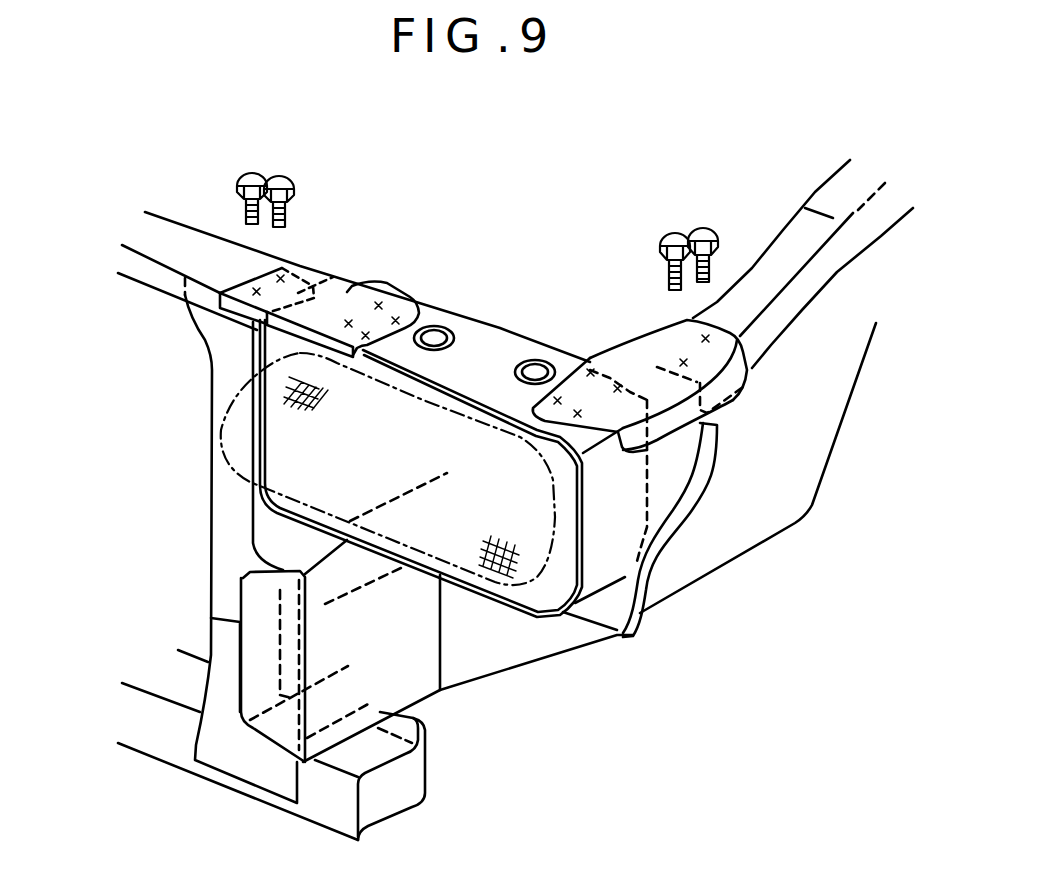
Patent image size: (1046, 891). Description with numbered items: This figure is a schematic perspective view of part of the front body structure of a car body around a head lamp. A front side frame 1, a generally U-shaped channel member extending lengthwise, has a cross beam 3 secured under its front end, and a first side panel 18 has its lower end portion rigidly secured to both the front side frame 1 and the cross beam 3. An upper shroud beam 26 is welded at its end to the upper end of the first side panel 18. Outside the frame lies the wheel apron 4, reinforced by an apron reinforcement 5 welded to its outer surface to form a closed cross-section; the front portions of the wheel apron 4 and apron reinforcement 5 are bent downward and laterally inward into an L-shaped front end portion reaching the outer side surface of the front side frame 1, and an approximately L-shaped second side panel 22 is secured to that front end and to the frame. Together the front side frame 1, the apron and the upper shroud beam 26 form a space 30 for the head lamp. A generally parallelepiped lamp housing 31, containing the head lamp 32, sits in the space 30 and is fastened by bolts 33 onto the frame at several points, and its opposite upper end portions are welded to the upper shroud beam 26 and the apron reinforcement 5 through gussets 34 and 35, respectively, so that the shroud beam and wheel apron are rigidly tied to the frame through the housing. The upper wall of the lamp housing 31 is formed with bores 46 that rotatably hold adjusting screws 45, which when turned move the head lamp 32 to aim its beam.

The front side frame 1 is at (211, 618).
The cross beam 3 is at (322, 812).
The wheel apron 4 is at (818, 392).
The apron reinforcement 5 is at (830, 272).
The first side panel 18 is at (218, 540).
The second side panel 22 is at (583, 645).
The upper shroud beam 26 is at (158, 227).
The space for a head lamp 30 is at (515, 252).
The lamp housing 31 is at (490, 340).
The head lamp 32 is at (522, 577).
The bolts 33 is at (280, 180).
The gusset 34 is at (322, 290).
The gusset 35 is at (645, 350).
The adjusting screw 45 is at (443, 328).
The bore 46 is at (429, 318).